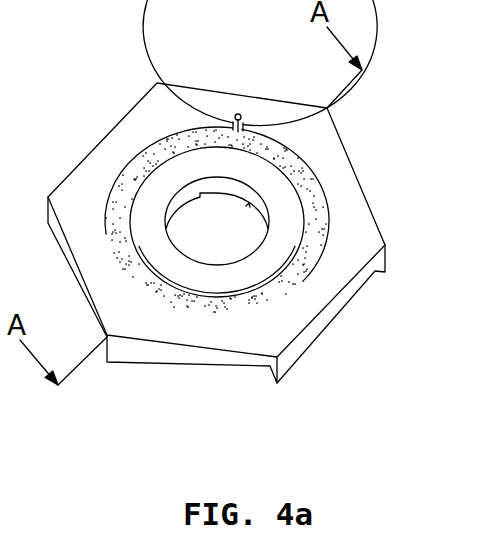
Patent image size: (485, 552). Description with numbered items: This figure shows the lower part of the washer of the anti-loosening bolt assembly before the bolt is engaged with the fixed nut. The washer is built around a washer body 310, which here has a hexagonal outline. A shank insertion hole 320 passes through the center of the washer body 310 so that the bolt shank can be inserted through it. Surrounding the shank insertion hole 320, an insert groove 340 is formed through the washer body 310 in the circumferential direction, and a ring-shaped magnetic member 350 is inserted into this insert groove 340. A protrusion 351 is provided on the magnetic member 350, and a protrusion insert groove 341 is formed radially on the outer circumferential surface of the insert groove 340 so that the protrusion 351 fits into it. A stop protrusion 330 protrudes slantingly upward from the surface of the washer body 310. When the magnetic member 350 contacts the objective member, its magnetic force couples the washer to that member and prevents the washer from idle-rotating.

The washer body 310 is at (356, 185).
The shank insertion hole 320 is at (188, 183).
The stop protrusion 330 is at (322, 332).
The insert groove 340 is at (137, 147).
The protrusion insert groove 341 is at (240, 115).
The magnetic member 350 is at (113, 196).
The protrusion 351 is at (236, 114).